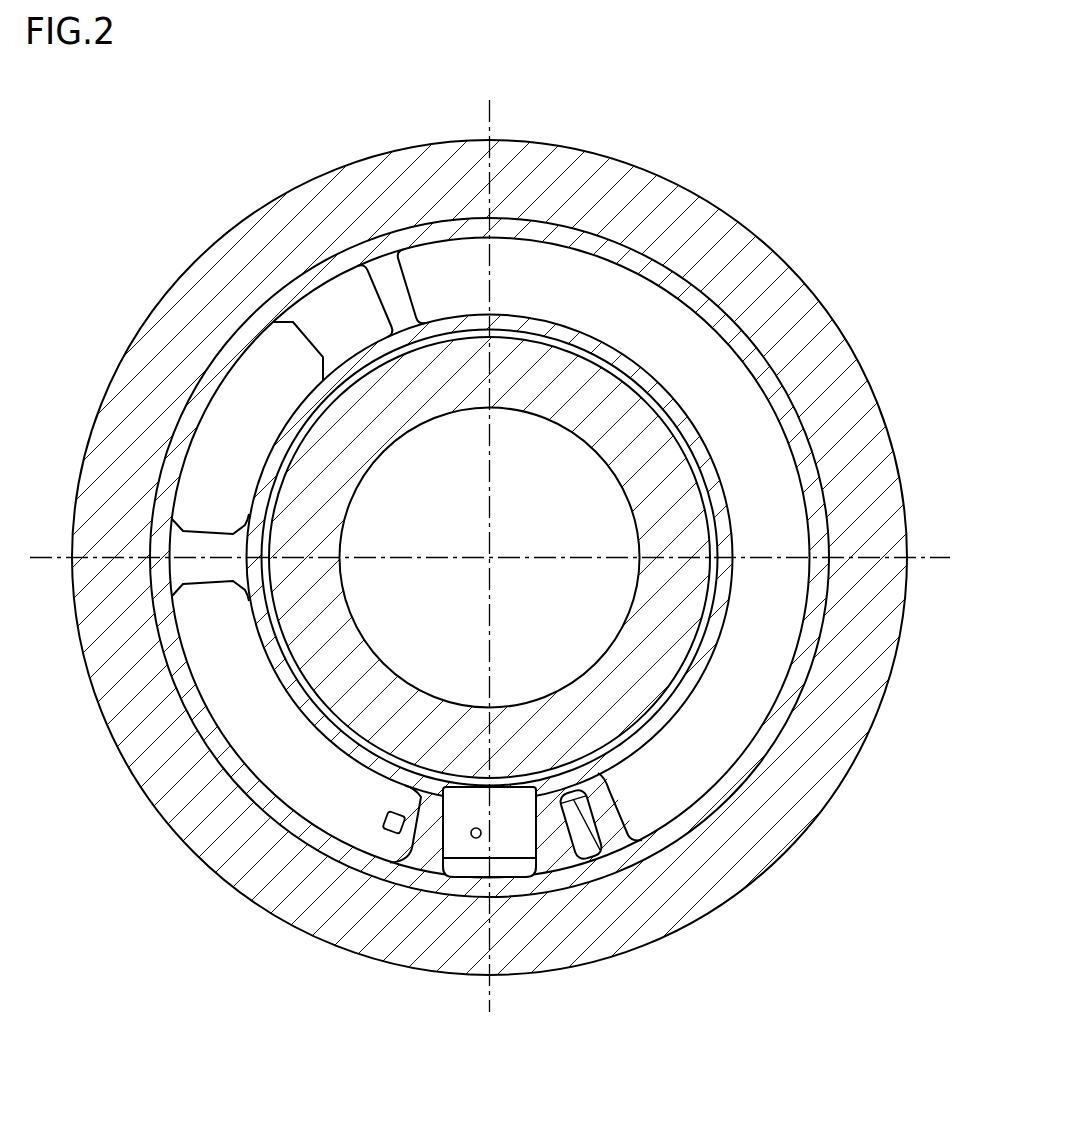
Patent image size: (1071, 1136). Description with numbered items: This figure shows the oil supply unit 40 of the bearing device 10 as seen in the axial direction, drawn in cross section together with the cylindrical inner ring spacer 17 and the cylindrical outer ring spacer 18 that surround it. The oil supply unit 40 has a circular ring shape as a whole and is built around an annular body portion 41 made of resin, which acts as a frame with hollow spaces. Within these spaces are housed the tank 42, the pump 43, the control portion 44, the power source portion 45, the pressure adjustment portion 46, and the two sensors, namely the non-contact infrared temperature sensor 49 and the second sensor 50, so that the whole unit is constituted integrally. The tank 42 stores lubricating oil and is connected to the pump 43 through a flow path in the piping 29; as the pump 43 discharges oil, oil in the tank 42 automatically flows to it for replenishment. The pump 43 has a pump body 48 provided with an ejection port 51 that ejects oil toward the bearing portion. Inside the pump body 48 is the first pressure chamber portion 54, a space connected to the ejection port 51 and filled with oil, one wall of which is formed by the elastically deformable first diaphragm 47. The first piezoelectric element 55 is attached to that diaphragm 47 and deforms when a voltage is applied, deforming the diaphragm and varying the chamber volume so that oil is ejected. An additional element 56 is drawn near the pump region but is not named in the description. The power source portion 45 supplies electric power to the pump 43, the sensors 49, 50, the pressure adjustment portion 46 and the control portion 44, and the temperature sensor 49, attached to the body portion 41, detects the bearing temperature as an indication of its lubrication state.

The bearing device 10 is at (731, 207).
The inner ring spacer 17 is at (350, 643).
The outer ring spacer 18 is at (118, 678).
The piping 29 is at (607, 852).
The oil supply unit 40 is at (570, 212).
The body portion 41 is at (390, 283).
The tank 42 is at (745, 433).
The pump 43 is at (453, 843).
The control portion 44 is at (262, 752).
The power source portion 45 is at (211, 419).
The pressure adjustment portion 46 is at (593, 800).
The first diaphragm 47 is at (522, 840).
The pump body 48 is at (537, 813).
The temperature sensor 49 is at (388, 833).
The sensor 50 is at (546, 813).
The ejection port 51 is at (476, 840).
The first pressure chamber portion 54 is at (468, 800).
The first piezoelectric element 55 is at (508, 840).
The hidden member 56 is at (520, 800).